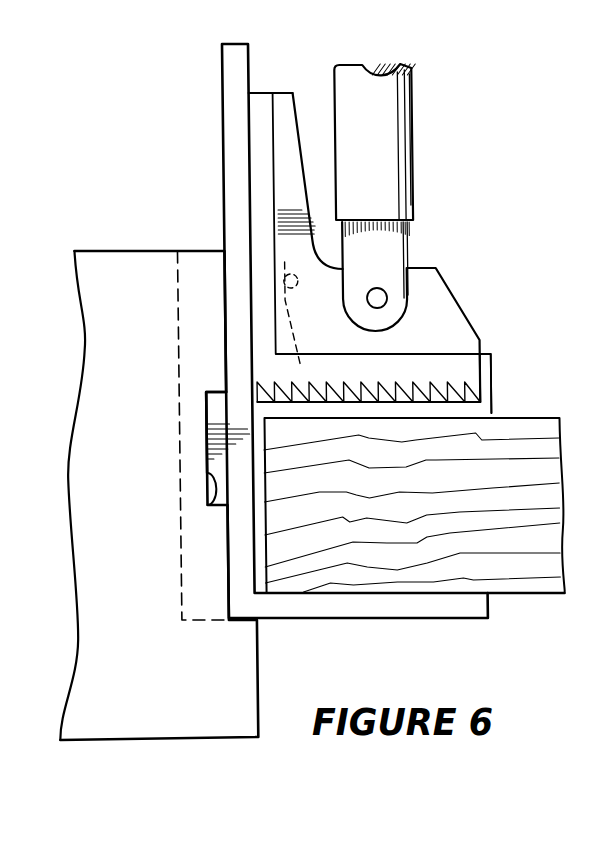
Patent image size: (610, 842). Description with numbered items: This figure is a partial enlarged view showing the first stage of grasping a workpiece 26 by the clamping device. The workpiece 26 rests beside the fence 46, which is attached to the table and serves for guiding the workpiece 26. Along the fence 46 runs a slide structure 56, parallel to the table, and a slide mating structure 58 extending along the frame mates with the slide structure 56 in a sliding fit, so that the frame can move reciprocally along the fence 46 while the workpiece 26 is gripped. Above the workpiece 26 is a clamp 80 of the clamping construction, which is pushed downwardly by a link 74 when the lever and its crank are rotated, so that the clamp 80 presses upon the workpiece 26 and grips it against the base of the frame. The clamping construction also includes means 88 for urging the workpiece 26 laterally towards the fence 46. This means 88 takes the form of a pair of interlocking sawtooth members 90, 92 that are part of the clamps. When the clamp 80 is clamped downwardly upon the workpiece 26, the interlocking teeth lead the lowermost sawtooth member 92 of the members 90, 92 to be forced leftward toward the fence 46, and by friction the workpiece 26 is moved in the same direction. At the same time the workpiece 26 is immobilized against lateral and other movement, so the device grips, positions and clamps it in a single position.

The workpiece 26 is at (503, 573).
The fence 46 is at (200, 278).
The slide structure 56 is at (207, 505).
The slide mating structure 58 is at (212, 411).
The link 74 is at (391, 152).
The clamp 80 is at (453, 328).
The means for urging the workpiece laterally 88 is at (419, 377).
The sawtooth member 90 is at (467, 375).
The sawtooth member 92 is at (478, 410).